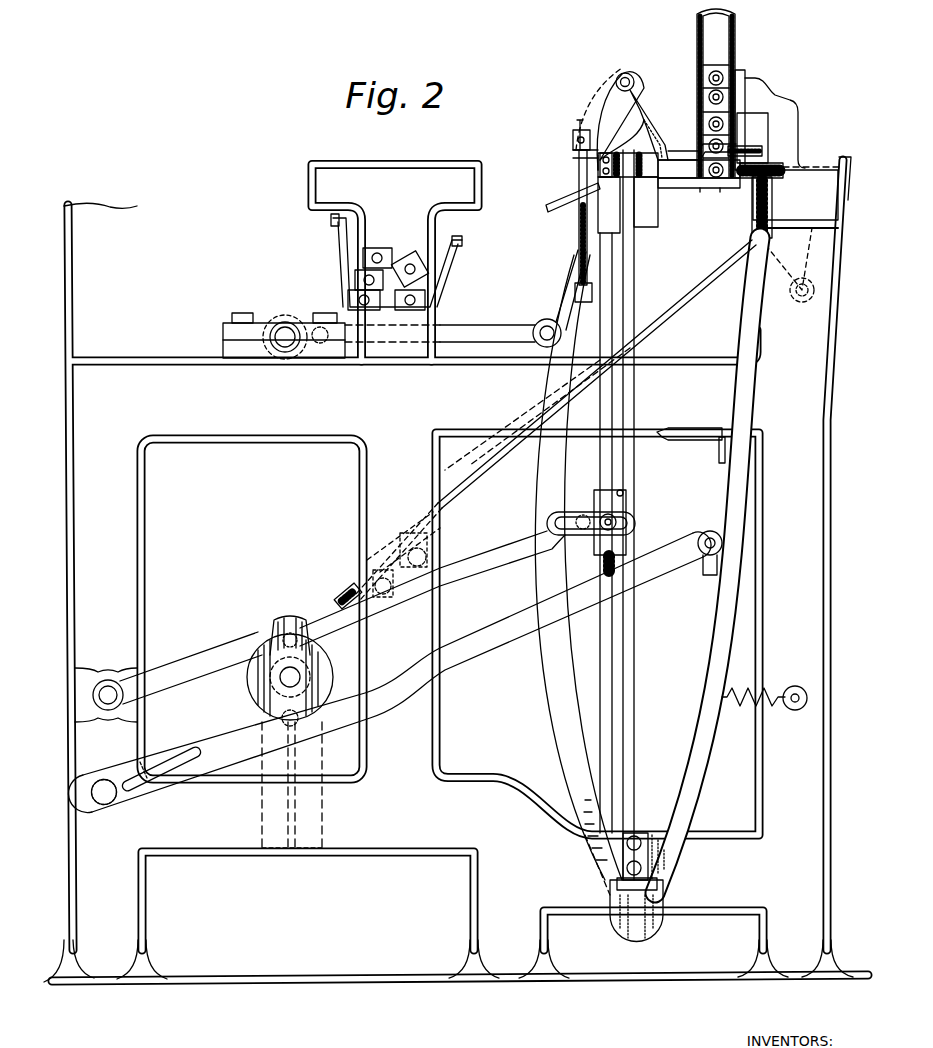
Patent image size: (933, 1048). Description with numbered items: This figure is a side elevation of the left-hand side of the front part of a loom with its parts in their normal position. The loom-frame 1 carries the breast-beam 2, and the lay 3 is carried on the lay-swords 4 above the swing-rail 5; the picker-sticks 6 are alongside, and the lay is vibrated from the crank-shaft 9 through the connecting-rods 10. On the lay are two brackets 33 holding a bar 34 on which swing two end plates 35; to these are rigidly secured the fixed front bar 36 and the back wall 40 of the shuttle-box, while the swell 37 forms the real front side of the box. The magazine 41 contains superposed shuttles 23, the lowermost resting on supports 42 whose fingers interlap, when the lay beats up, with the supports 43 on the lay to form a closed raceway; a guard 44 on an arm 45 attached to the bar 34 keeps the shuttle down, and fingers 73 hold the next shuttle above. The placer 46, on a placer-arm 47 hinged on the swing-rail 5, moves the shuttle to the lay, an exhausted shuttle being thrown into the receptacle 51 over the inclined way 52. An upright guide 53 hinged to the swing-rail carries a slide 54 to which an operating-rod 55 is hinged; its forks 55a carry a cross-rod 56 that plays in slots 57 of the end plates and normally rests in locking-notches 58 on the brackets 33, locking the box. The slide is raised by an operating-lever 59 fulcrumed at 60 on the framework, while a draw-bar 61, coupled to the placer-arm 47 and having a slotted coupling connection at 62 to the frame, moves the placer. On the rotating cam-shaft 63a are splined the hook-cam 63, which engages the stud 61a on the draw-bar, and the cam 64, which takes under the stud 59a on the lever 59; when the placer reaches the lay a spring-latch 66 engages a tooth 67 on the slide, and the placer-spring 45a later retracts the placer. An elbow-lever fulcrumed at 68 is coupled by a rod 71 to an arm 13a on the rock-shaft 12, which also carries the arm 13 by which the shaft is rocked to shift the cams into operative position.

The loom-frame 1 is at (456, 571).
The breast-beam 2 is at (793, 153).
The lay 3 is at (650, 226).
The lay-swords 4 is at (566, 710).
The swing-rail 5 is at (658, 916).
The picker-sticks 6 is at (614, 388).
The crank-shaft 9 is at (285, 332).
The connecting-rods 10 is at (480, 340).
The rock-shaft 12 is at (802, 300).
The arm 13 is at (845, 158).
The arm 13a is at (770, 240).
The shuttle 23 is at (708, 80).
The brackets 33 is at (606, 102).
The bar 34 is at (628, 76).
The end plates 35 is at (620, 121).
The fixed front bar 36 is at (699, 164).
The swell 37 is at (662, 189).
The back wall 40 is at (598, 162).
The magazine 41 is at (732, 93).
The supports 42 is at (718, 195).
The supports 43 is at (698, 192).
The guard 44 is at (690, 150).
The arm 45 is at (644, 102).
The placer-spring 45a is at (755, 705).
The placer 46 is at (752, 195).
The placer-arm 47 is at (745, 496).
The receptacle 51 is at (342, 276).
The inclined way 52 is at (567, 197).
The upright guide 53 is at (636, 672).
The slide 54 is at (594, 501).
The operating-rod 55 is at (566, 376).
The forks 55a is at (578, 240).
The cross-rod 56 is at (573, 140).
The slots 57 is at (577, 124).
The locking-notches 58 is at (574, 154).
The operating-lever 59 is at (467, 579).
The stud 59a is at (289, 630).
The fulcrum 60 is at (108, 680).
The draw-bar 61 is at (486, 645).
The stud 61a is at (300, 722).
The slotted coupling connection 62 is at (105, 779).
The hook-cam 63 is at (312, 680).
The cam-shaft 63a is at (300, 676).
The cam 64 is at (246, 690).
The spring-latch 66 is at (696, 441).
The tooth 67 is at (623, 492).
The fulcrum 68 is at (336, 594).
The rod 71 is at (470, 478).
The fingers 73 is at (745, 146).